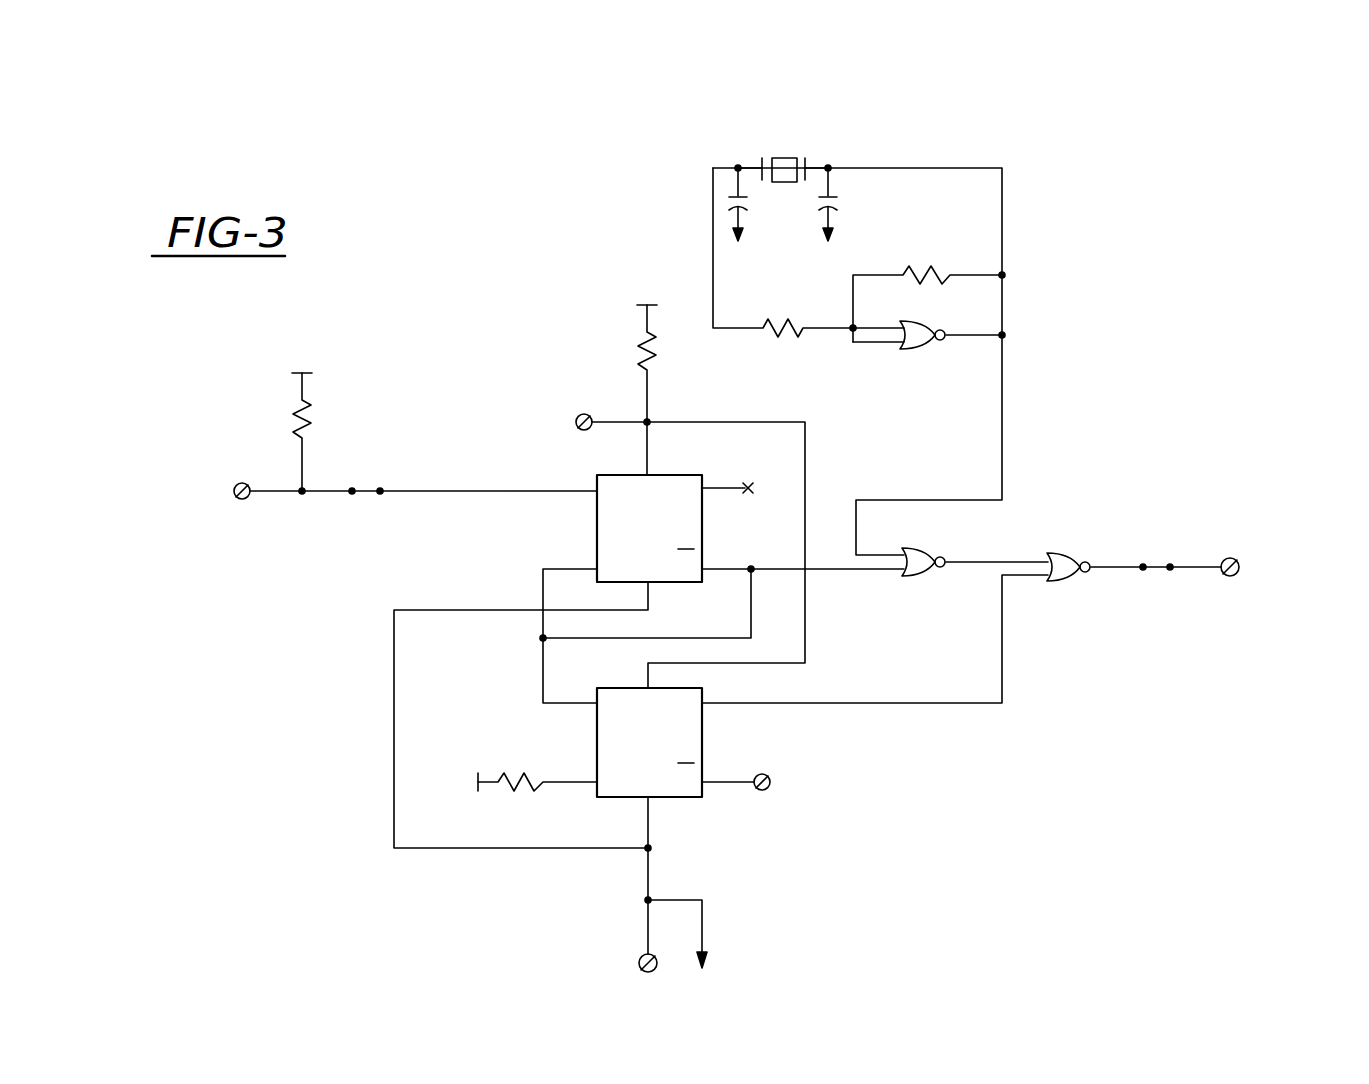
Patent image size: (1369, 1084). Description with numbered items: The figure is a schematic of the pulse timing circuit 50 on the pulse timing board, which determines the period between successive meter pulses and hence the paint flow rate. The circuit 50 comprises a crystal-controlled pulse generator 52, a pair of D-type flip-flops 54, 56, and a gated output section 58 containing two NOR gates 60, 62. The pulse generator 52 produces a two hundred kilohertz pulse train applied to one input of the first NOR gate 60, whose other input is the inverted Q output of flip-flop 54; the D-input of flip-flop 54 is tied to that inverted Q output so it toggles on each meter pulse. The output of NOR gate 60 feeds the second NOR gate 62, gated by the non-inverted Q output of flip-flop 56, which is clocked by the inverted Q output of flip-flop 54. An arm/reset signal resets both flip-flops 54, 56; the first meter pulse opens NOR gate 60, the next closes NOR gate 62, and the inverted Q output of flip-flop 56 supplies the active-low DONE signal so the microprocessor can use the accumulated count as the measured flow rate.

The pulse timing circuit 50 is at (603, 208).
The pulse generator 52 is at (968, 158).
The first D-type flip-flop 54 is at (597, 537).
The second D-type flip-flop 56 is at (597, 735).
The gated output section 58 is at (1090, 525).
The first two-input NOR gate 60 is at (922, 578).
The second two-input NOR gate 62 is at (1065, 581).